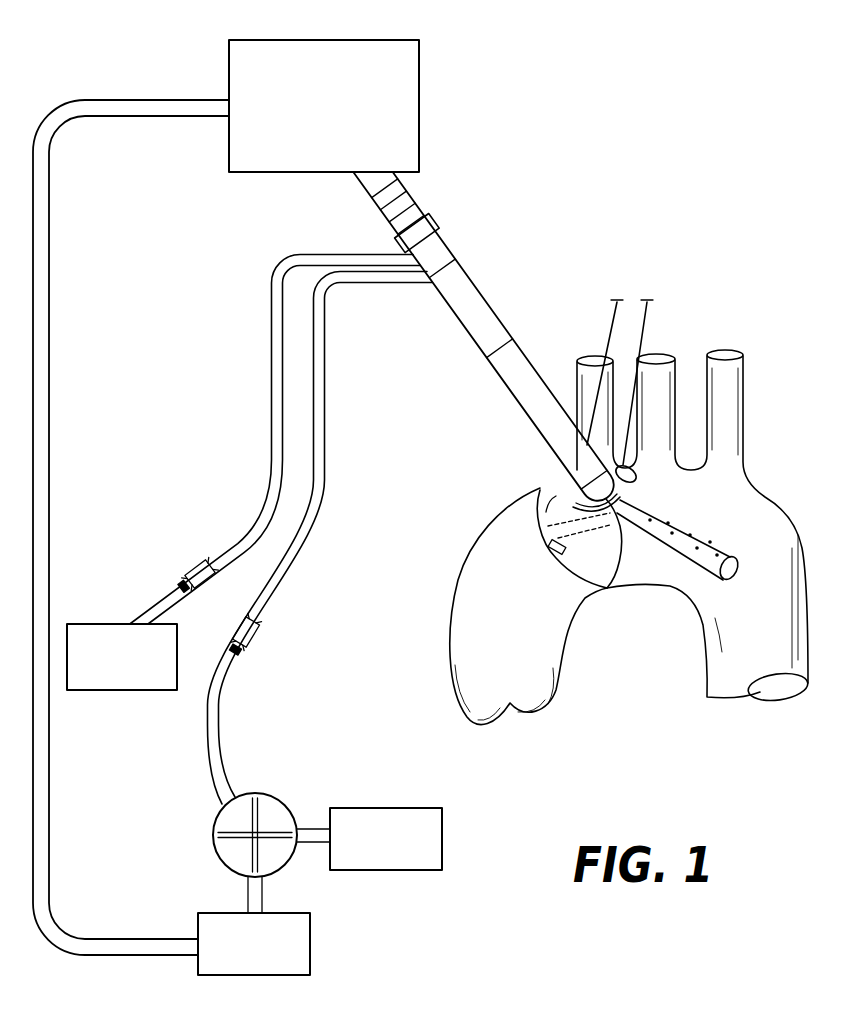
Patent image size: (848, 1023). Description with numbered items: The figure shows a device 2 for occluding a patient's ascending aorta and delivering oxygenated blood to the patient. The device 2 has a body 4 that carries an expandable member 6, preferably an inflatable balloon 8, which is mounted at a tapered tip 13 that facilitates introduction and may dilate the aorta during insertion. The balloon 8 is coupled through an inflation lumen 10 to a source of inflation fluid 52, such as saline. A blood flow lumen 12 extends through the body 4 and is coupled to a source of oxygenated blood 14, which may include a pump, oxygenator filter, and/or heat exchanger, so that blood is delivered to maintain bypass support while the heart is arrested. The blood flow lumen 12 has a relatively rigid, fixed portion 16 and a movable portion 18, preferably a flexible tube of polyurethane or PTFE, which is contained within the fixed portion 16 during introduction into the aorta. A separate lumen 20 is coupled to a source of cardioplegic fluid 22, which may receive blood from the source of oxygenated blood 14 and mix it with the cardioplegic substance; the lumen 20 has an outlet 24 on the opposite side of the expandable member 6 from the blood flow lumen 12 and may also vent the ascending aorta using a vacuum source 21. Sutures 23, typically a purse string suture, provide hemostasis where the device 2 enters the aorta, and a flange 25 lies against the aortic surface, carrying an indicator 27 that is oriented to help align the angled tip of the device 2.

The device 2 is at (476, 171).
The body 4 is at (483, 336).
The expandable member 6 is at (610, 582).
The inflatable balloon 8 is at (628, 562).
The inflation lumen 10 is at (296, 258).
The blood flow lumen 12 is at (436, 249).
The tapered tip 13 is at (545, 530).
The source of oxygenated blood 14 is at (408, 50).
The fixed portion 16 is at (533, 410).
The movable portion 18 is at (678, 530).
The lumen 20 is at (323, 387).
The vacuum source 21 is at (437, 833).
The source of cardioplegic fluid 22 is at (303, 935).
The sutures 23 is at (647, 298).
The outlet 24 is at (554, 556).
The flange 25 is at (632, 481).
The indicator 27 is at (554, 486).
The source of inflation fluid 52 is at (110, 623).